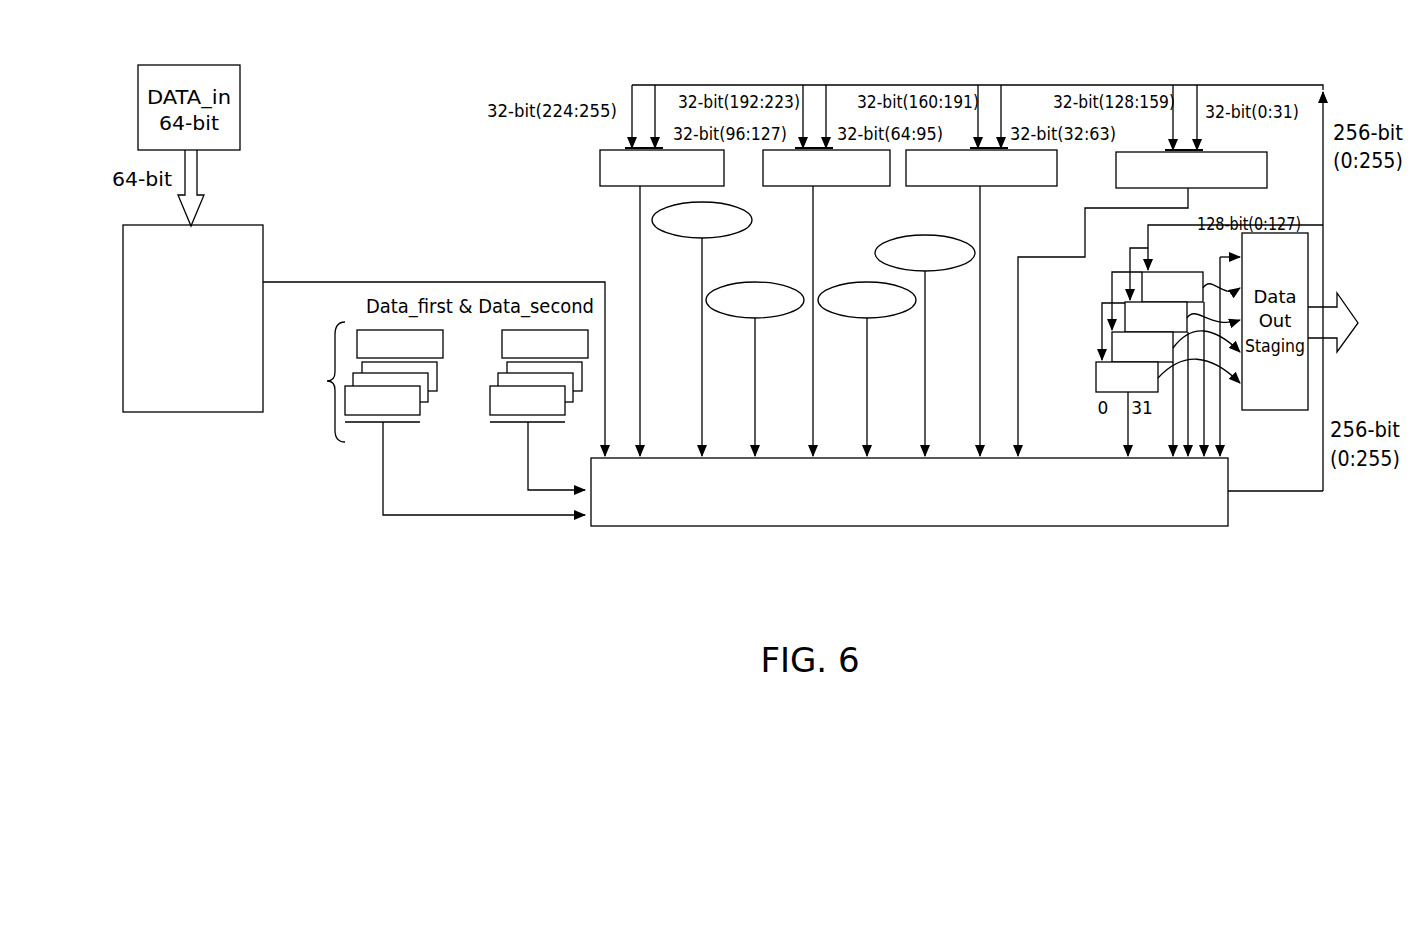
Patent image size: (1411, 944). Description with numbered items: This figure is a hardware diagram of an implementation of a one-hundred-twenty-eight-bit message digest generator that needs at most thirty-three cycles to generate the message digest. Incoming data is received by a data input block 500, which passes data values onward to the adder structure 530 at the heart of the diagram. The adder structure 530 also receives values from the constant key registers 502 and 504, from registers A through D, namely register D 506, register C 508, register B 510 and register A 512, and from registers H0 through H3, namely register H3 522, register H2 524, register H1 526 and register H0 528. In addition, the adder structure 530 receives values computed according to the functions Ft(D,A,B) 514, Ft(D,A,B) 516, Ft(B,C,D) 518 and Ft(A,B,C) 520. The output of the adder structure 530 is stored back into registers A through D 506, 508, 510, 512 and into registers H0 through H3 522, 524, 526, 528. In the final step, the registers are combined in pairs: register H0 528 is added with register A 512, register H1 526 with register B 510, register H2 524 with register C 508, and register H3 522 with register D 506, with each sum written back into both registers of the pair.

The data input block 500 is at (263, 253).
The constant key register 502 is at (363, 384).
The constant key register 504 is at (490, 396).
The register D 506 is at (615, 186).
The register C 508 is at (828, 186).
The register B 510 is at (995, 186).
The register A 512 is at (1116, 168).
The Ft(D,A,B) function 514 is at (690, 238).
The Ft(D,A,B) function 516 is at (764, 318).
The Ft(B,C,D) function 518 is at (876, 318).
The Ft(A,B,C) function 520 is at (934, 271).
The register H3 522 is at (1130, 284).
The register H2 524 is at (1112, 316).
The register H1 526 is at (1102, 350).
The register H0 528 is at (1096, 380).
The adder structure 530 is at (1010, 527).